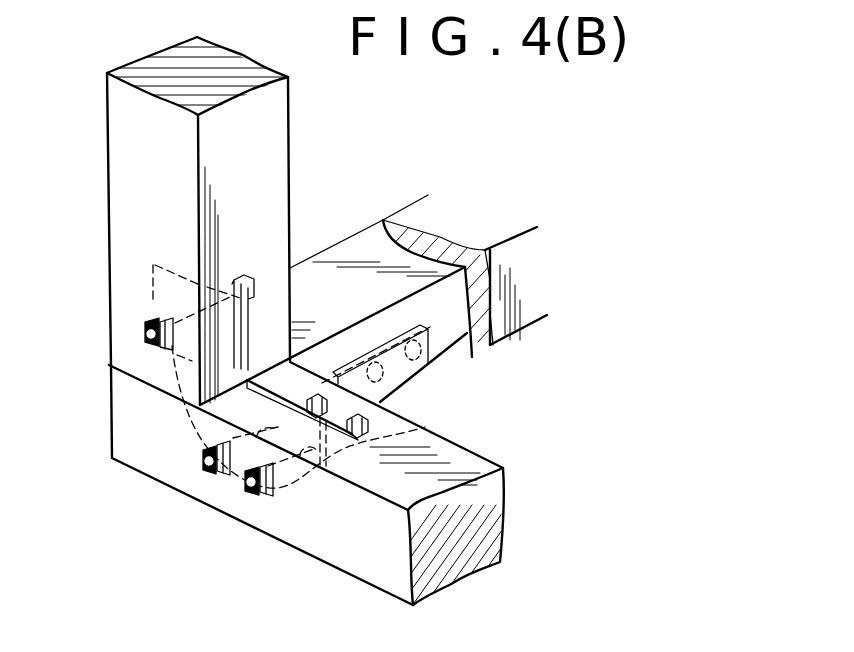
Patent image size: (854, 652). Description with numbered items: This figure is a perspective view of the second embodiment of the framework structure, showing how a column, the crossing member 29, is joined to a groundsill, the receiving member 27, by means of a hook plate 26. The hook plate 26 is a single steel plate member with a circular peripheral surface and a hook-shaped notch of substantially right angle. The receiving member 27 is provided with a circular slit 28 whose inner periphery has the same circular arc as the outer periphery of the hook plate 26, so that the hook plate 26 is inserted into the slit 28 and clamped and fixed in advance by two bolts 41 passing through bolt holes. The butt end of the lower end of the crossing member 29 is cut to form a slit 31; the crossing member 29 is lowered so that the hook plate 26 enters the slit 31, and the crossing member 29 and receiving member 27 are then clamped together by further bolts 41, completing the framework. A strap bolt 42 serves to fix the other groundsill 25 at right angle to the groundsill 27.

The crossing member 29 is at (283, 70).
The receiving member 27 is at (340, 535).
The groundsill 25 is at (458, 223).
The strap bolt 42 is at (460, 370).
The hook plate 26 is at (250, 324).
The slit 28 is at (425, 427).
The slit 31 is at (153, 293).
The bolt 41 is at (145, 336).